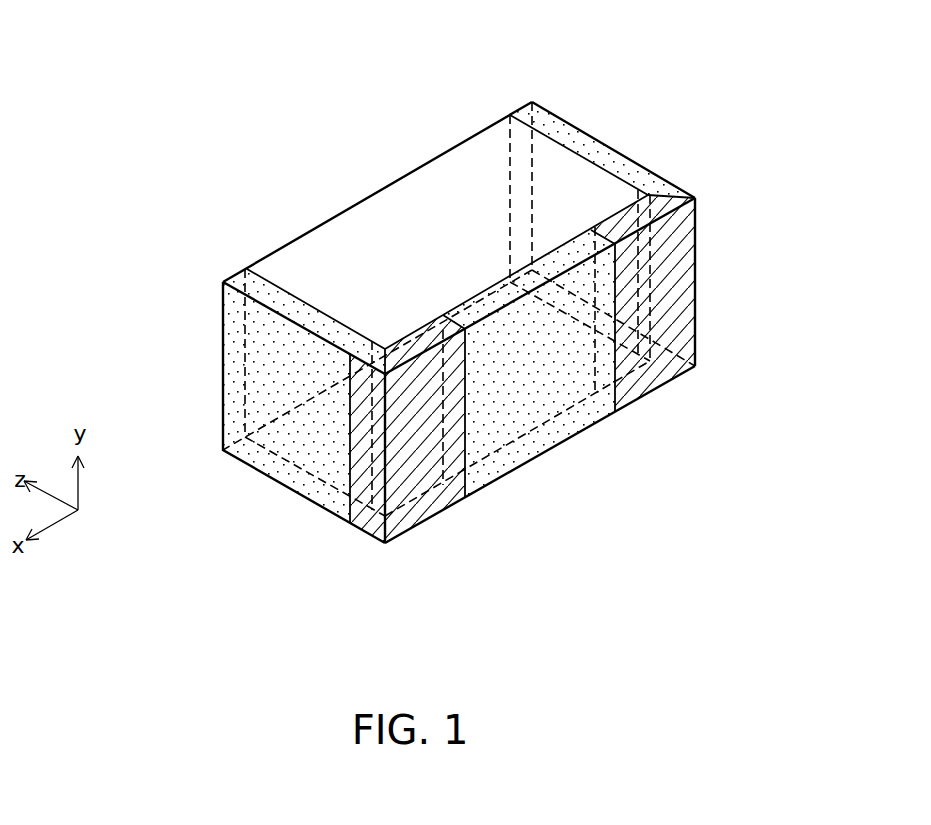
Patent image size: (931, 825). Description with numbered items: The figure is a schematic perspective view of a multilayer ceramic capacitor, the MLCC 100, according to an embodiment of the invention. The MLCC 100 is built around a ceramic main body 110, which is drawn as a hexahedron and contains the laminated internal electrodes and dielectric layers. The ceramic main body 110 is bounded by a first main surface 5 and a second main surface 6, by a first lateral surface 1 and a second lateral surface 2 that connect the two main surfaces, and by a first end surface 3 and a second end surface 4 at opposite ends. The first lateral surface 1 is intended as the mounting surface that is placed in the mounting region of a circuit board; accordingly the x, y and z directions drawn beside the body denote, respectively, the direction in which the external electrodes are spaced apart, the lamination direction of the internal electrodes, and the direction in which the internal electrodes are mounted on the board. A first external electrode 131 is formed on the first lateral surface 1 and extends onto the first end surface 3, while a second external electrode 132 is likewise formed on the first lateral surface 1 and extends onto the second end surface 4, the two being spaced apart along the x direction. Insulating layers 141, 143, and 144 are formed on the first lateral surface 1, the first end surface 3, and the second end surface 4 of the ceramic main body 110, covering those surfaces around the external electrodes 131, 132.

The multilayer ceramic capacitor 100 is at (207, 119).
The ceramic main body 110 is at (255, 316).
The first lateral surface 1 is at (565, 403).
The second lateral surface 2 is at (318, 272).
The first end surface 3 is at (255, 388).
The second end surface 4 is at (557, 177).
The first main surface 5 is at (420, 203).
The second main surface 6 is at (362, 468).
The first external electrode 131 is at (443, 506).
The second external electrode 132 is at (668, 335).
The insulating layer 141 is at (503, 467).
The insulating layer 143 is at (285, 445).
The insulating layer 144 is at (620, 165).